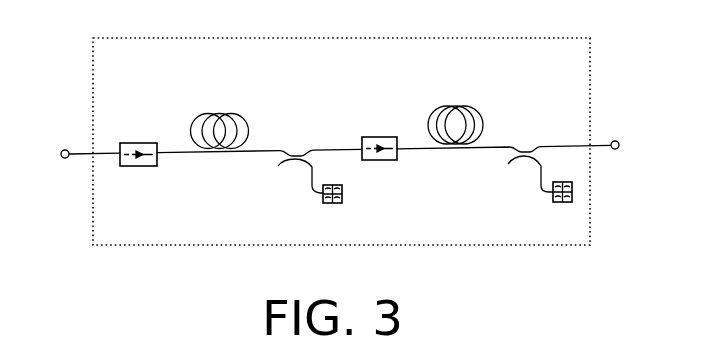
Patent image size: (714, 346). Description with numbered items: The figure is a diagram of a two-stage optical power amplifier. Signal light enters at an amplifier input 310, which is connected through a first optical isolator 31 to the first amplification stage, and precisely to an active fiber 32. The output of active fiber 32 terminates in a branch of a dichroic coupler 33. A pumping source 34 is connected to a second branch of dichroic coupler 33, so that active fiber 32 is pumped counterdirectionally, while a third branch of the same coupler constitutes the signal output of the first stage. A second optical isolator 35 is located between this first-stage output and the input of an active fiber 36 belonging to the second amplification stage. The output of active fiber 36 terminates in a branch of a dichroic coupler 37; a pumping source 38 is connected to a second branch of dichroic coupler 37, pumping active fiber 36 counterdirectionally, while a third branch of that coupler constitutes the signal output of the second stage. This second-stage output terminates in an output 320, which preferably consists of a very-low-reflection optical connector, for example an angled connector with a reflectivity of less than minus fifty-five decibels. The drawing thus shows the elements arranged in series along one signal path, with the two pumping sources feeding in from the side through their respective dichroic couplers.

The amplifier input 310 is at (65, 141).
The output 320 is at (616, 134).
The first optical isolator 31 is at (141, 141).
The active fiber 32 is at (218, 108).
The dichroic coupler 33 is at (296, 145).
The pumping source 34 is at (332, 211).
The second optical isolator 35 is at (382, 133).
The active fiber 36 is at (454, 101).
The dichroic coupler 37 is at (526, 142).
The pumping source 38 is at (563, 209).